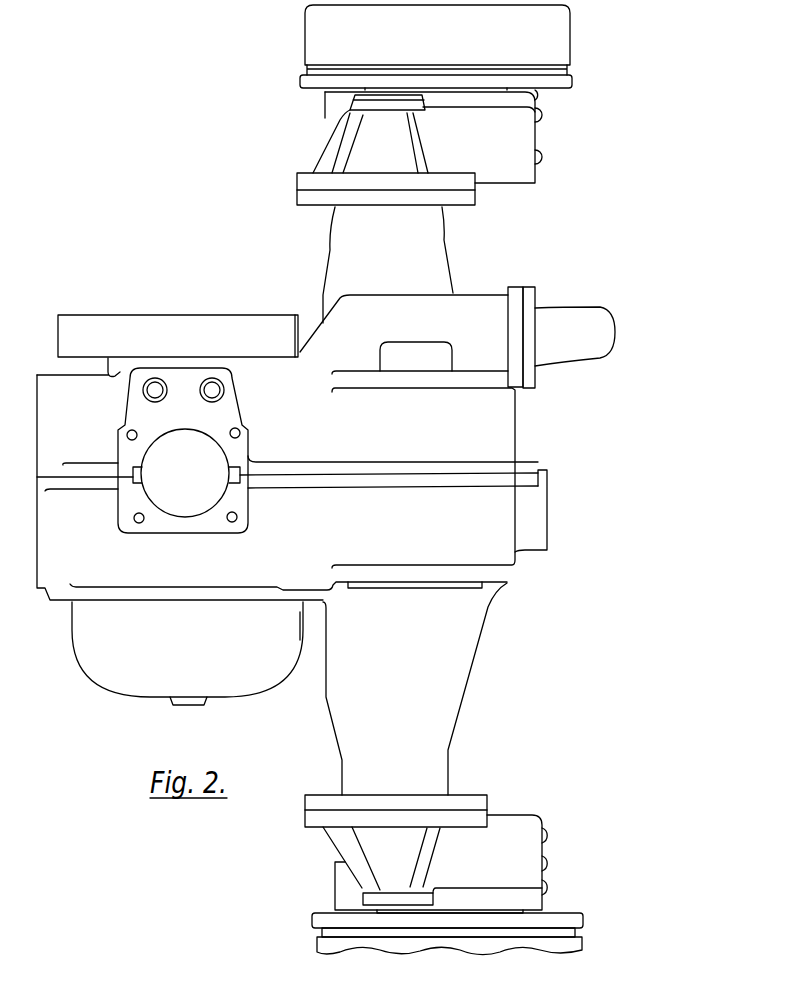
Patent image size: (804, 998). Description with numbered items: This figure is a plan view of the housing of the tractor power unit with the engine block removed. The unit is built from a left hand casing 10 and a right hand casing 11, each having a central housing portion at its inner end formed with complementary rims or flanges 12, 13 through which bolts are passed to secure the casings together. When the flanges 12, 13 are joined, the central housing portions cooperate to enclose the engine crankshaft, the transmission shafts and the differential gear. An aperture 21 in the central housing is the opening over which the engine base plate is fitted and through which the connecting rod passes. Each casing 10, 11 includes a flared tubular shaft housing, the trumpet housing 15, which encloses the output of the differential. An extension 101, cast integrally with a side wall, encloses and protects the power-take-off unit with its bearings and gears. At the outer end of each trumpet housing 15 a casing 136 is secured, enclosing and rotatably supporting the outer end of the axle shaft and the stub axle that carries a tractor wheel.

The left hand casing 10 is at (436, 561).
The right hand casing 11 is at (475, 300).
The flange 12 is at (541, 483).
The flange 13 is at (512, 467).
The trumpet housing 15 is at (415, 243).
The aperture 21 is at (185, 457).
The extension 101 is at (570, 315).
The casing 136 is at (512, 149).